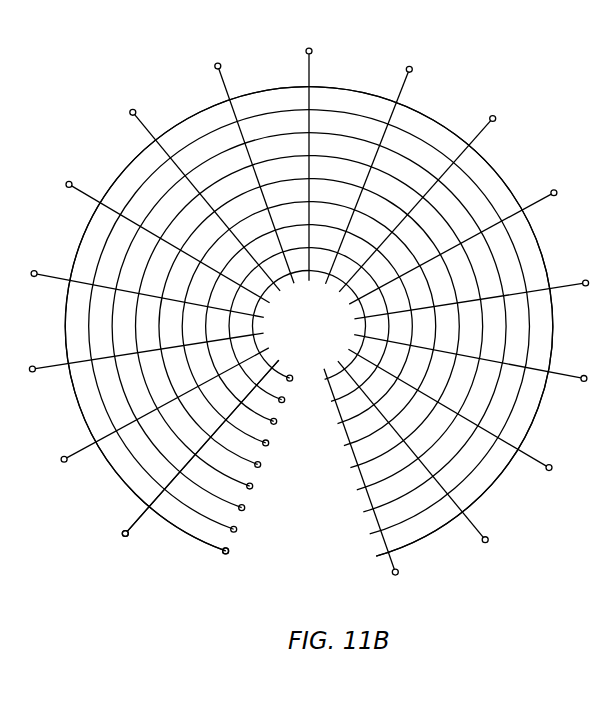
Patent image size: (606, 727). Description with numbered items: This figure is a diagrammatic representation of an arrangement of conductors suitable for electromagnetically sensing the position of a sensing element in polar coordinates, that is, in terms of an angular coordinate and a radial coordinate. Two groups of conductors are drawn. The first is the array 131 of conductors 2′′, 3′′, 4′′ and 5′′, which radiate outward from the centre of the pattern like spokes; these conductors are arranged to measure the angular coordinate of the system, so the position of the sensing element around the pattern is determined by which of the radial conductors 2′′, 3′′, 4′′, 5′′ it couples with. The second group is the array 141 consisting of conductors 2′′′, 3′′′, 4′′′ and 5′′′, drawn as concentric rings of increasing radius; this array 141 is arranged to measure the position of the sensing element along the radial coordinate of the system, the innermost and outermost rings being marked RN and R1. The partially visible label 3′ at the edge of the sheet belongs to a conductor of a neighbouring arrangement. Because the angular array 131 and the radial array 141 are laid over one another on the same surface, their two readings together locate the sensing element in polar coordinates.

The concentric ring electrode array 141 is at (500, 500).
The array of conductors 131 is at (147, 538).
The conductor 2′′′ is at (340, 86).
The conductor 3′′′ is at (400, 126).
The conductor 4′′′ is at (449, 193).
The fourth ring electrode 5′′′ is at (470, 260).
The conductor 2′′ is at (142, 519).
The conductor 3′′ is at (83, 445).
The conductor 4′′ is at (48, 363).
The fourth radial electrode 5′′ is at (48, 276).
The radial electrode (partially shown) 3′ is at (135, 241).
The first radius ring R1 is at (225, 554).
The Nth radius ring RN is at (291, 385).